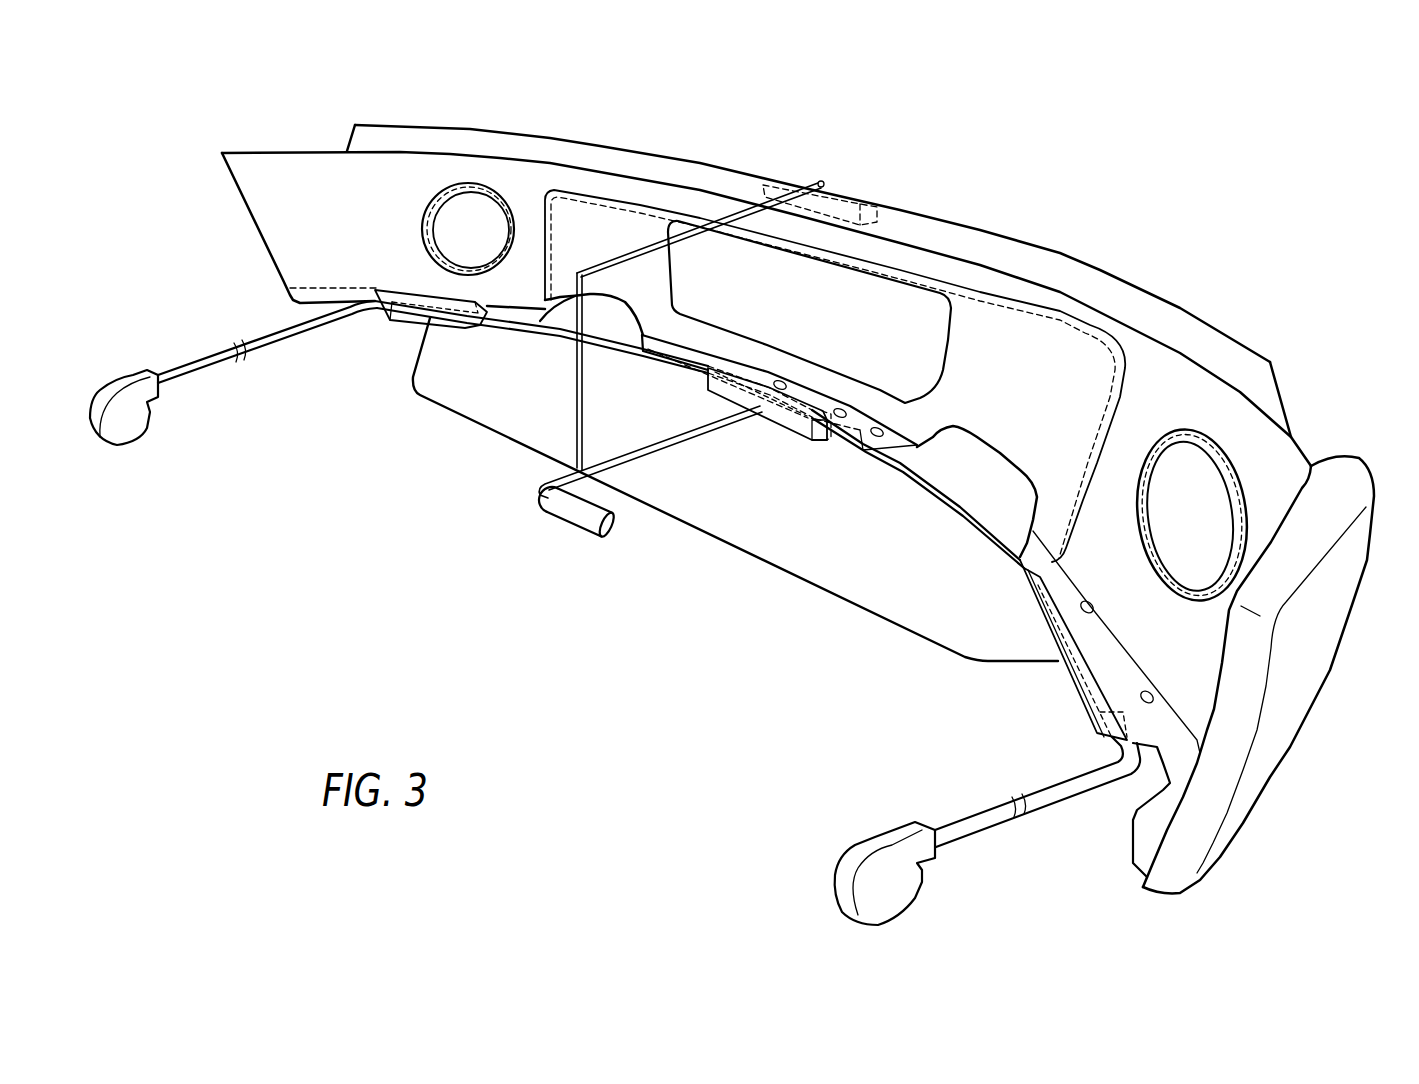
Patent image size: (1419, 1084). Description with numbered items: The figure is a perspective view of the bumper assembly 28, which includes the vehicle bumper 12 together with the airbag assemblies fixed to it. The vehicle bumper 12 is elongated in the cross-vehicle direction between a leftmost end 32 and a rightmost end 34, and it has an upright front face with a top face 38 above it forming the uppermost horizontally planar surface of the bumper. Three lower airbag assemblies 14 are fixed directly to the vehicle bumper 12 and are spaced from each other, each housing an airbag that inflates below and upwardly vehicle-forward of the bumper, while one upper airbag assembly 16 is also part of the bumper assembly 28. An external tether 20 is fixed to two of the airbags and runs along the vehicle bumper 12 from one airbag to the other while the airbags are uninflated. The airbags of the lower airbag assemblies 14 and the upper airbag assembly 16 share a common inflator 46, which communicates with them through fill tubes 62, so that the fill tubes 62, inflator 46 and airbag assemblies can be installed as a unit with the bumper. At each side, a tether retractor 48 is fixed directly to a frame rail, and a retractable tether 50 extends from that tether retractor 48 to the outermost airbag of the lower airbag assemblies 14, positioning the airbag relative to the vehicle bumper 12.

The vehicle bumper 12 is at (1332, 477).
The lower airbag assembly 14 is at (397, 339).
The upper airbag assembly 16 is at (856, 192).
The external tether 20 is at (555, 337).
The bumper assembly 28 is at (1057, 212).
The leftmost end 32 is at (363, 126).
The rightmost end 34 is at (1283, 718).
The top face 38 is at (1292, 432).
The inflator 46 is at (578, 523).
The tether retractor 48 is at (118, 377).
The retractable tether 50 is at (198, 373).
The fill tube 62 is at (483, 427).